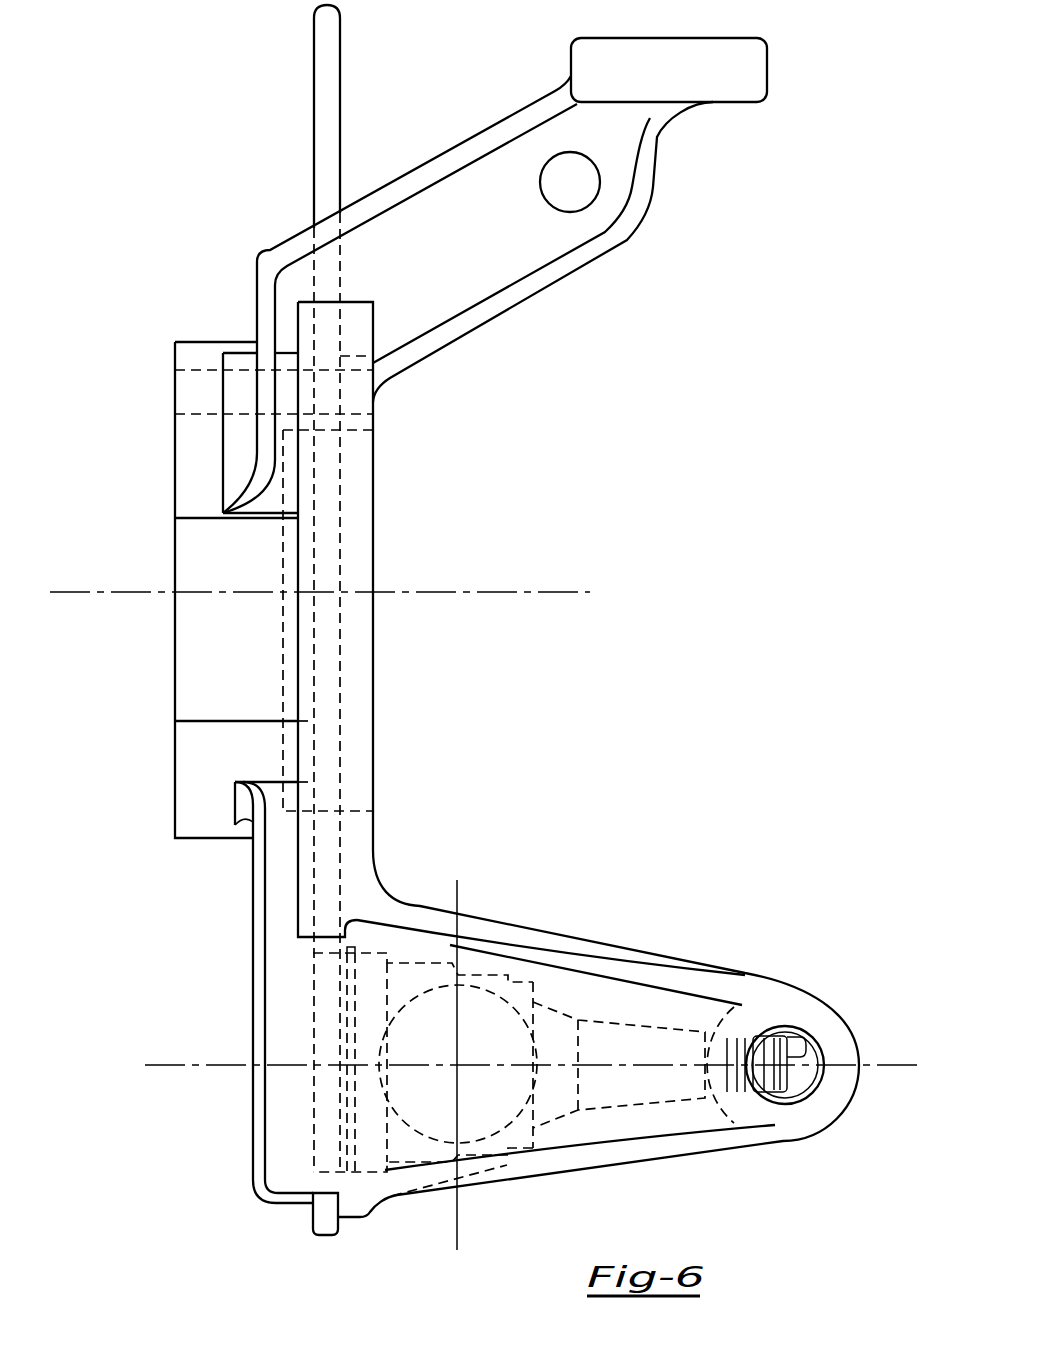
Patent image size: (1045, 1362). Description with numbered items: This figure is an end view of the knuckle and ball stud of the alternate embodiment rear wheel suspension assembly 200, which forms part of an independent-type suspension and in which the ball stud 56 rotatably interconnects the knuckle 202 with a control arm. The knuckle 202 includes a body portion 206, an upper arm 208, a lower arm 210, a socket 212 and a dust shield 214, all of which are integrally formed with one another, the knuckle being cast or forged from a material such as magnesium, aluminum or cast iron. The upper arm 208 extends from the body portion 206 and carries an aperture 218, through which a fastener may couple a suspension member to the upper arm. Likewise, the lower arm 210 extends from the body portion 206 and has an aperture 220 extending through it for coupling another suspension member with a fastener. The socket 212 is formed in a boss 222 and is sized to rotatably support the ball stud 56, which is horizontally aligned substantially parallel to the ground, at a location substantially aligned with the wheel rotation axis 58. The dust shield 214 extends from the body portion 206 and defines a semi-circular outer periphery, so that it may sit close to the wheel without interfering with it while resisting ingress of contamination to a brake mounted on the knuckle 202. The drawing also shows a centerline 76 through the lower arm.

The rear wheel suspension assembly 200 is at (690, 305).
The knuckle 202 is at (182, 98).
The body portion 206 is at (185, 358).
The upper arm 208 is at (495, 168).
The lower arm 210 is at (673, 1148).
The socket 212 is at (504, 1000).
The dust shield 214 is at (322, 62).
The aperture 218 is at (566, 200).
The aperture 220 is at (805, 1052).
The boss 222 is at (410, 952).
The ball stud 56 is at (641, 1010).
The wheel rotation axis 58 is at (505, 585).
The axis 76 is at (890, 1068).